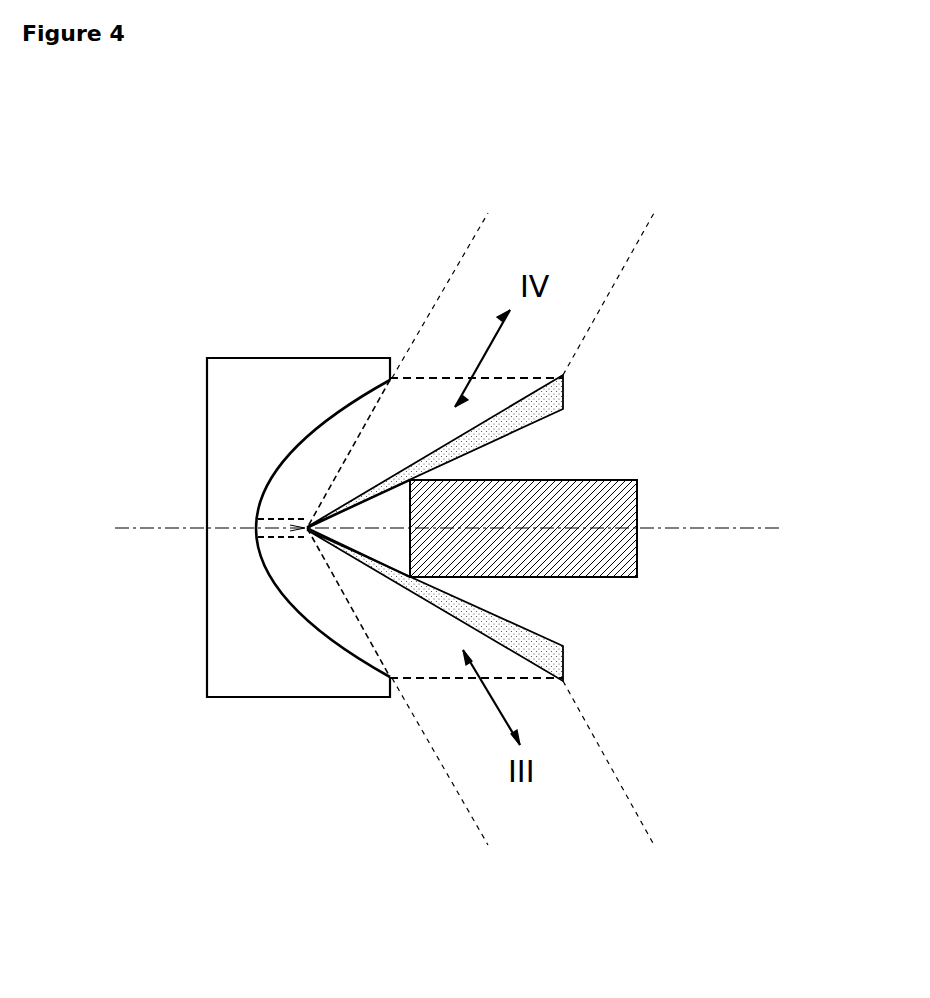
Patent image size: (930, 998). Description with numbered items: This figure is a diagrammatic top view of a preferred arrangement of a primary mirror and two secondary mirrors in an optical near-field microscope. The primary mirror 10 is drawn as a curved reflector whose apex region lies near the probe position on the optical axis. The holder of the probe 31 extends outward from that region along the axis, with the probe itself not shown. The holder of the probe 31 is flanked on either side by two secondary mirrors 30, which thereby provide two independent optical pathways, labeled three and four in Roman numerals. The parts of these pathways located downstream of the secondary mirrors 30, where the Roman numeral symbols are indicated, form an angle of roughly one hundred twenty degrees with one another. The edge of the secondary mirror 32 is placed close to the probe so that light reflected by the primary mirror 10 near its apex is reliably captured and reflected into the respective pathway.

The primary mirror 10 is at (282, 527).
The secondary mirror 30 is at (454, 528).
The holder of the probe 31 is at (490, 528).
The edge of the secondary mirror 32 is at (303, 540).